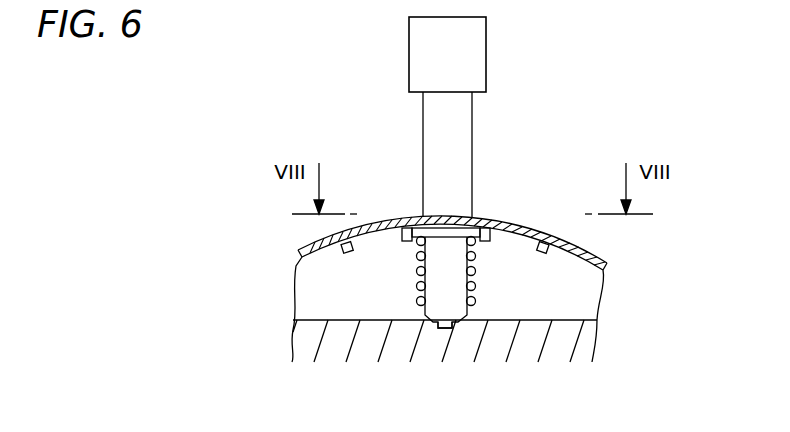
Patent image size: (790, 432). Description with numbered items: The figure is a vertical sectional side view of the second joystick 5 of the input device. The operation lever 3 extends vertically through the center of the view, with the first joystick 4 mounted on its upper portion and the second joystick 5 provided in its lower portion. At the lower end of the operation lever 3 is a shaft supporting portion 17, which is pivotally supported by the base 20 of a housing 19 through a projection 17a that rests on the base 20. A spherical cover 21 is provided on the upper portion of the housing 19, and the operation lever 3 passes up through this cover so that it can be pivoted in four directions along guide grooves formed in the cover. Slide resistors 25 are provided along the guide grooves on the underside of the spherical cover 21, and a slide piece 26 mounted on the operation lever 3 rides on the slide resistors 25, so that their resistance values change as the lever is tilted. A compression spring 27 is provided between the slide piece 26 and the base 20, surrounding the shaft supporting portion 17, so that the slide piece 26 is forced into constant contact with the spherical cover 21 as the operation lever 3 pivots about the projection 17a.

The operation lever 3 is at (472, 102).
The first joystick 4 is at (420, 53).
The second joystick 5 is at (541, 223).
The shaft supporting portion 17 is at (435, 278).
The projection 17a is at (447, 328).
The housing 19 is at (567, 235).
The base 20 is at (592, 352).
The spherical cover 21 is at (396, 217).
The slide resistors 25 is at (490, 241).
The slide piece 26 is at (443, 232).
The compression spring 27 is at (476, 288).